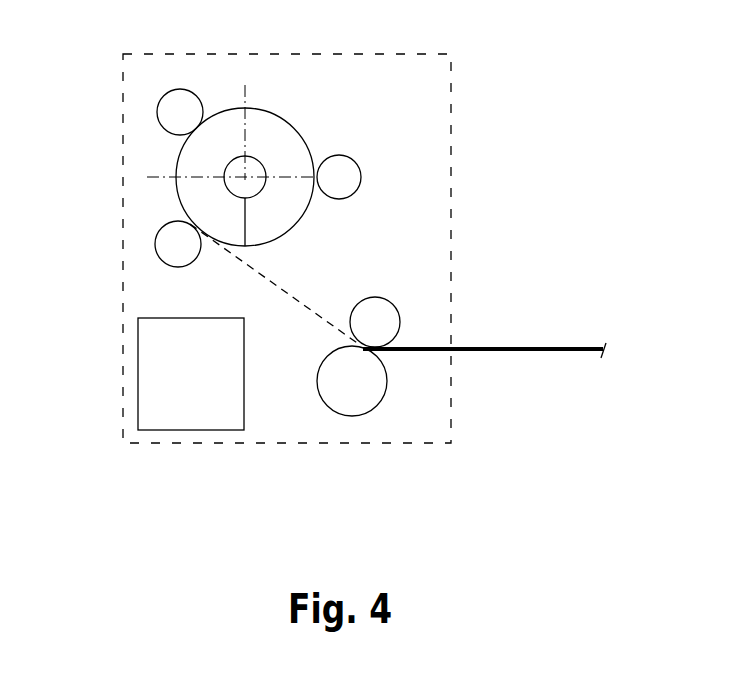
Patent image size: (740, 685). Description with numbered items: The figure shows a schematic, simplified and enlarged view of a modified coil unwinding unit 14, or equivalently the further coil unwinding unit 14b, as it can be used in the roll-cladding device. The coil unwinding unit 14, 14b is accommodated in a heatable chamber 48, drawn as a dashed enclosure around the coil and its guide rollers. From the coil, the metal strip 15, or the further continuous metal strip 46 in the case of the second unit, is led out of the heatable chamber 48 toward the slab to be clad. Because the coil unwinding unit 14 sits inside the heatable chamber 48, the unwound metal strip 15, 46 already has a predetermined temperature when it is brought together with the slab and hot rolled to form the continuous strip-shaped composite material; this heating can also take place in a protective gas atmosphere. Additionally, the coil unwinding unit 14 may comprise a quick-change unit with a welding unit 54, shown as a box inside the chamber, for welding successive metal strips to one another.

The coil unwinding unit 14 is at (346, 240).
The second coil unwinding unit 14b is at (346, 240).
The heatable chamber 48 is at (452, 139).
The welding unit 54 is at (172, 397).
The metal strip 15 is at (506, 287).
The further continuous metal strip 46 is at (538, 345).